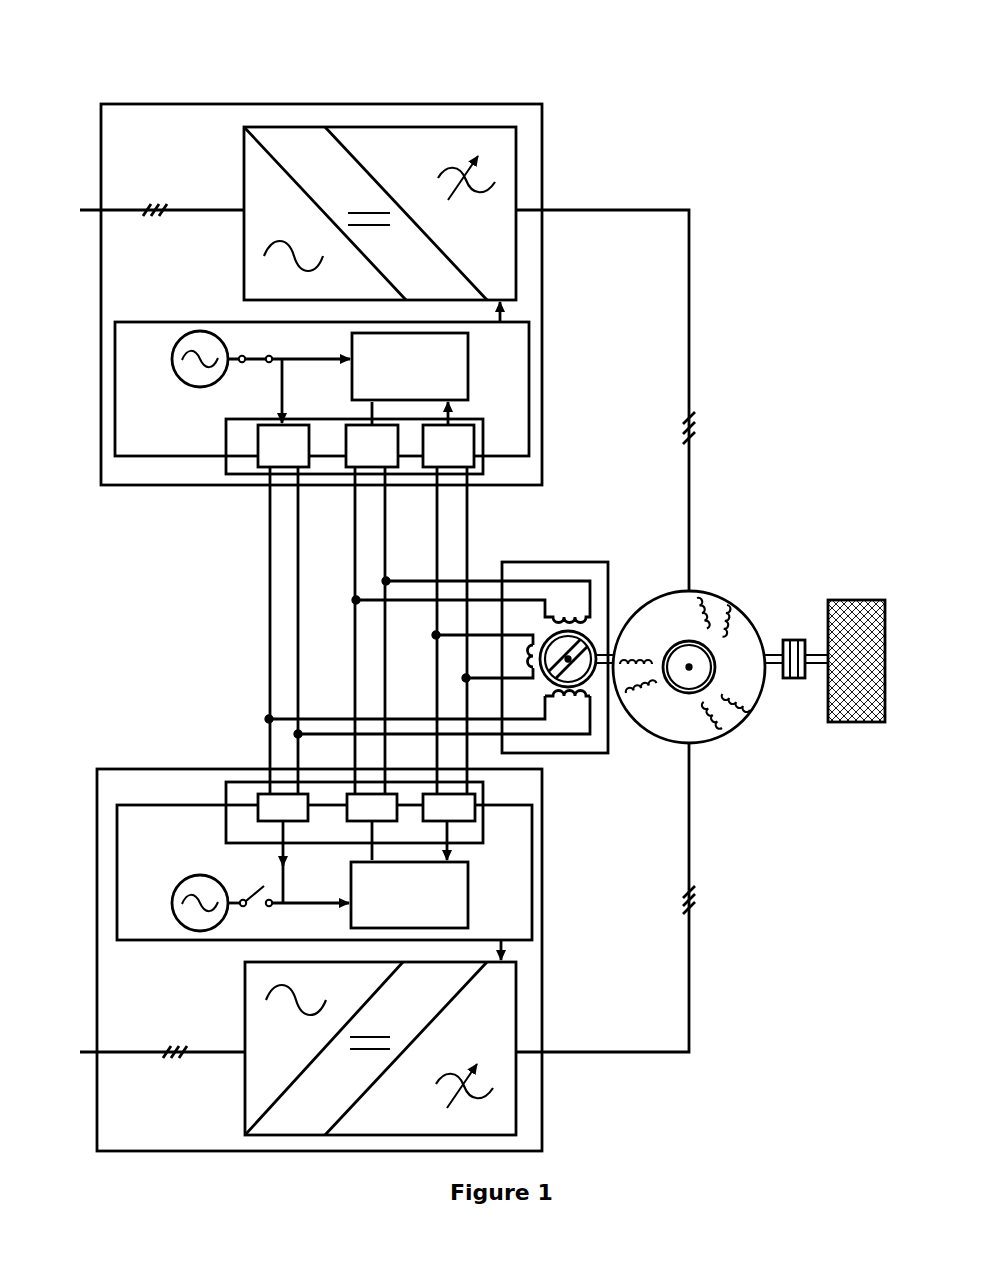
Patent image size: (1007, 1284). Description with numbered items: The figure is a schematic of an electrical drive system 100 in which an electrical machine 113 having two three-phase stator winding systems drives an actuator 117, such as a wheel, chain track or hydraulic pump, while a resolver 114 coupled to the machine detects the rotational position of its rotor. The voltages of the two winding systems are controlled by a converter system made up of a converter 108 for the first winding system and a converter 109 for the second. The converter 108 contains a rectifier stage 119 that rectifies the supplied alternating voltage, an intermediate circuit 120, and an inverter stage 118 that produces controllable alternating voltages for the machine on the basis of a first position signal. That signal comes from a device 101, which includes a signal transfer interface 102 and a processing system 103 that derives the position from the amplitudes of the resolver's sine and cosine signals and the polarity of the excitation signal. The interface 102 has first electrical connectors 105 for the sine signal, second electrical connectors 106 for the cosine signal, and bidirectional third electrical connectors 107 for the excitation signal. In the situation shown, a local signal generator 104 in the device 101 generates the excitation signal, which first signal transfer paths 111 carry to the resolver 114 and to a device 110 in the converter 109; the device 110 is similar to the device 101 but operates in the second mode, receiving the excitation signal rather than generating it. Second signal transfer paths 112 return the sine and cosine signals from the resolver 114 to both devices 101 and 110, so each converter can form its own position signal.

The electrical drive system 100 is at (740, 107).
The device for producing a first position signal 101 is at (128, 322).
The signal transfer interface 102 is at (483, 446).
The processing system 103 is at (410, 366).
The local signal generator 104 is at (172, 360).
The first electrical connectors 105 is at (372, 446).
The second electrical connectors 106 is at (448, 446).
The third electrical connectors 107 is at (283, 446).
The converter 108 is at (542, 188).
The converter 109 is at (542, 977).
The device for producing a second position signal 110 is at (140, 940).
The first signal transfer paths 111 is at (268, 747).
The second signal transfer paths 112 is at (463, 690).
The electrical machine 113 is at (700, 592).
The resolver 114 is at (560, 562).
The actuator 117 is at (860, 600).
The inverter stage 118 is at (439, 171).
The rectifier stage 119 is at (291, 228).
The intermediate circuit 120 is at (380, 213).